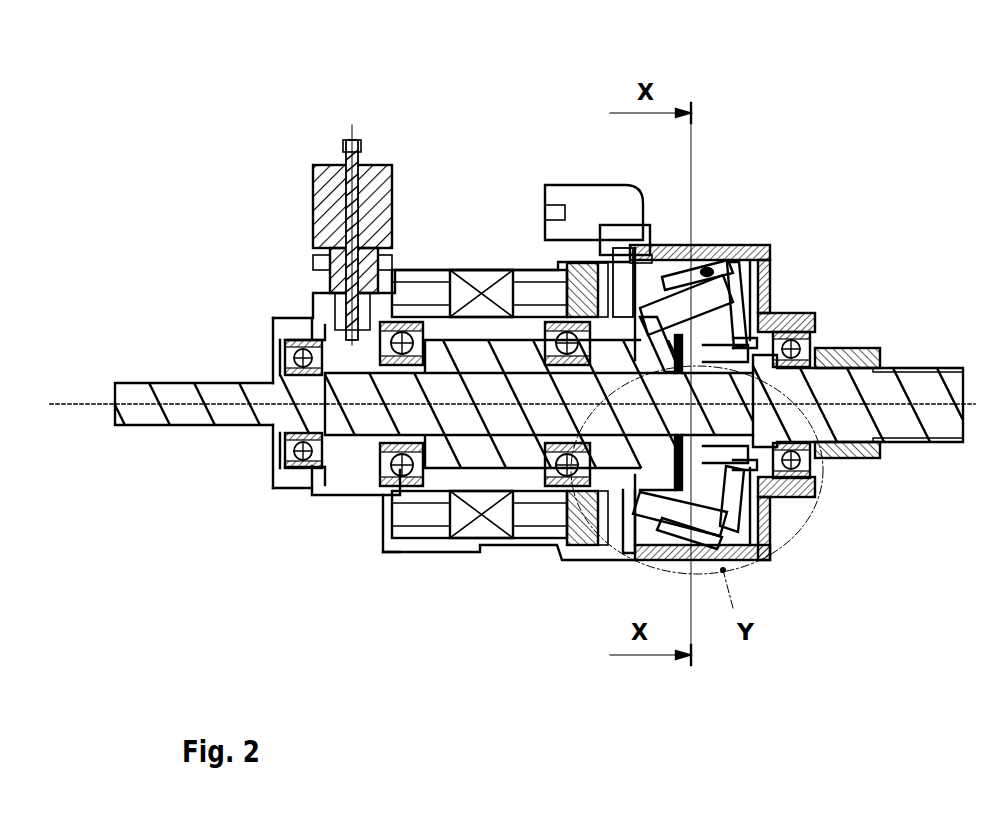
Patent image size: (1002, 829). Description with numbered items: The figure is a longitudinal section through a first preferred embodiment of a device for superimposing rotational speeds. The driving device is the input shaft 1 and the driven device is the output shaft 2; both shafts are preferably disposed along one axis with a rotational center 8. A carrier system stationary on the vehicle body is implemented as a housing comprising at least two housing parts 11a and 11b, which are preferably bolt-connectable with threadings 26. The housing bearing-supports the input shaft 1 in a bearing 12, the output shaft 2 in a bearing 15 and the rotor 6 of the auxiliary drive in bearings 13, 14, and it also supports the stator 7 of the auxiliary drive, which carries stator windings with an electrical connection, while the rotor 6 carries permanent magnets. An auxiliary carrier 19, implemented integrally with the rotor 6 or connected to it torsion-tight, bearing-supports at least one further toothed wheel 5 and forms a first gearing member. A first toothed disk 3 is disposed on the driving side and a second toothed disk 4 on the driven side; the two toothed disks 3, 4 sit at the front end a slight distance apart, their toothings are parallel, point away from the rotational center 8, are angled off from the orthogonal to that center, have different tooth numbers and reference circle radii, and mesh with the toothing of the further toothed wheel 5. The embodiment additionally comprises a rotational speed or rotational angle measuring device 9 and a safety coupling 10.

The input shaft 1 is at (177, 395).
The output shaft 2 is at (865, 387).
The first toothed disk 3 is at (718, 298).
The second toothed disk 4 is at (722, 332).
The further toothed wheel 5 is at (705, 273).
The rotor 6 is at (482, 342).
The stator 7 is at (443, 293).
The rotational center 8 is at (900, 404).
The rotational speed or rotational angle measuring device 9 is at (585, 205).
The safety coupling 10 is at (328, 183).
The housing part 11a is at (423, 267).
The housing part 11b is at (697, 342).
The bearing 12 is at (300, 468).
The bearing 13 is at (407, 480).
The bearing 14 is at (594, 448).
The bearing 15 is at (790, 497).
The auxiliary carrier 19 is at (648, 335).
The threadings 26 is at (652, 250).